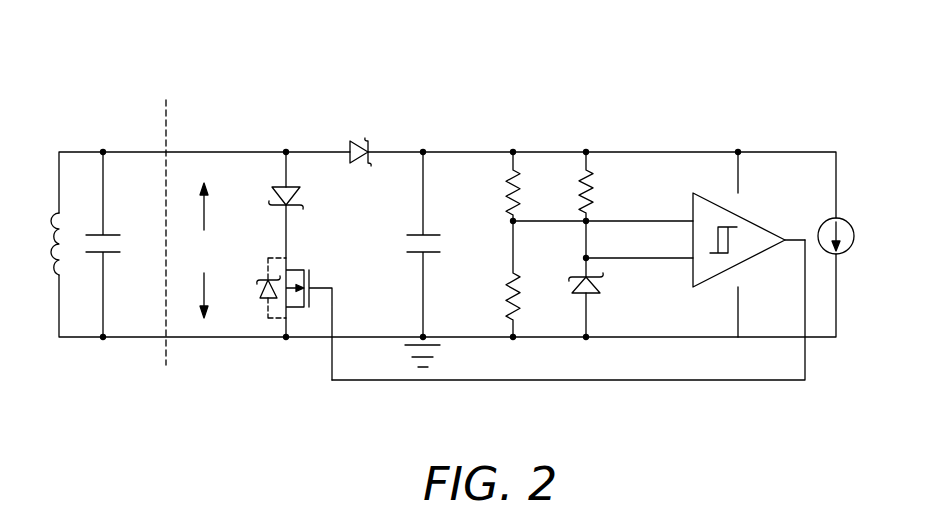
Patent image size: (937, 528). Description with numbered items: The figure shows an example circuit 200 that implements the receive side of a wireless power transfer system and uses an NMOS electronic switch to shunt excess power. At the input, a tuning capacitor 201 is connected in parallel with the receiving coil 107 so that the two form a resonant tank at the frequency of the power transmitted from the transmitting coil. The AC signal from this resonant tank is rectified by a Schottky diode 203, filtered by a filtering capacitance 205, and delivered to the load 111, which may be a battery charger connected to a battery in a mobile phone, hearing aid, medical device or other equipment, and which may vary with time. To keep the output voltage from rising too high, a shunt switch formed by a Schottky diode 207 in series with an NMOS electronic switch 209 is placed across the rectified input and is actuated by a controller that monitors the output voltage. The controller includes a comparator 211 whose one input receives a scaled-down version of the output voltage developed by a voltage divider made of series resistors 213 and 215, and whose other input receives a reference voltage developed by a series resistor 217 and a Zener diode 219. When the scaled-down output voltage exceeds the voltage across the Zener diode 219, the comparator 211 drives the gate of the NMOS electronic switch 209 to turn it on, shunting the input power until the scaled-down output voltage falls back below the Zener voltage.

The circuit 200 is at (205, 64).
The receiving coil 107 is at (50, 215).
The tuning capacitor 201 is at (112, 234).
The Schottky diode 203 is at (350, 147).
The Schottky diode 207 is at (283, 186).
The NMOS electronic switch 209 is at (310, 279).
The filtering capacitance 205 is at (430, 234).
The resistor 213 is at (530, 170).
The series resistor 217 is at (602, 170).
The resistor 215 is at (508, 318).
The Zener diode 219 is at (583, 298).
The comparator 211 is at (755, 256).
The load 111 is at (842, 218).